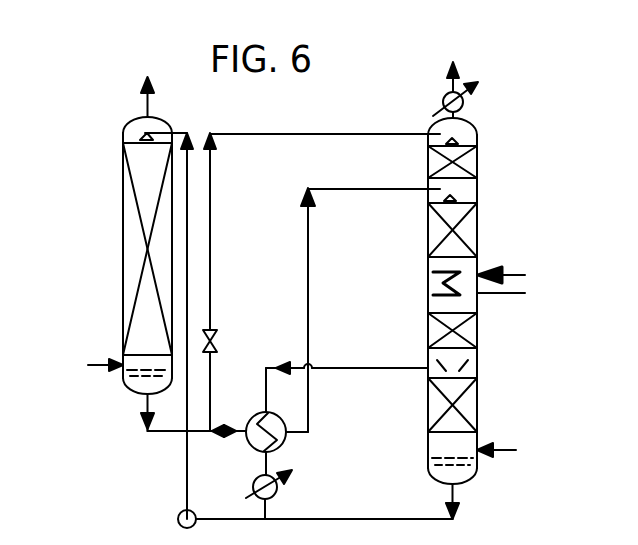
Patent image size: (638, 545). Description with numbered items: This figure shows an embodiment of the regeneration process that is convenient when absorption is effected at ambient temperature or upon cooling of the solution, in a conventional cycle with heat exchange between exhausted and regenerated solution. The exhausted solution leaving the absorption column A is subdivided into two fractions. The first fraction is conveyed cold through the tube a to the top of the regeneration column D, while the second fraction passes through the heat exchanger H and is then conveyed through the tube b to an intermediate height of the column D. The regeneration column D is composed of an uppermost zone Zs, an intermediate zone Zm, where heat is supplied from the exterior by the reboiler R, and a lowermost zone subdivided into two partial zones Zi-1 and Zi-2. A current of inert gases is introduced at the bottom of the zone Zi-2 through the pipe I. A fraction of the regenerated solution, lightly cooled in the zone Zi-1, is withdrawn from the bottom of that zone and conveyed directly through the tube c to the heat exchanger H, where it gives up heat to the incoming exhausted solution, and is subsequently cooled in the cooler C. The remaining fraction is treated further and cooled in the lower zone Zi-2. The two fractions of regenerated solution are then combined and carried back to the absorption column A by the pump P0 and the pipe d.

The absorption column A is at (167, 257).
The tube a is at (321, 282).
The tube b is at (363, 310).
The tube c is at (347, 359).
The pipe d is at (169, 321).
The regeneration column D is at (463, 290).
The heat exchanger H is at (264, 421).
The cooler C is at (269, 494).
The pump P0 is at (301, 516).
The reboiler R is at (479, 272).
The pipe I is at (503, 450).
The uppermost zone Zs is at (437, 164).
The intermediate zone Zm is at (437, 230).
The partial zone Zi-1 is at (414, 330).
The partial zone Zi-2 is at (414, 405).